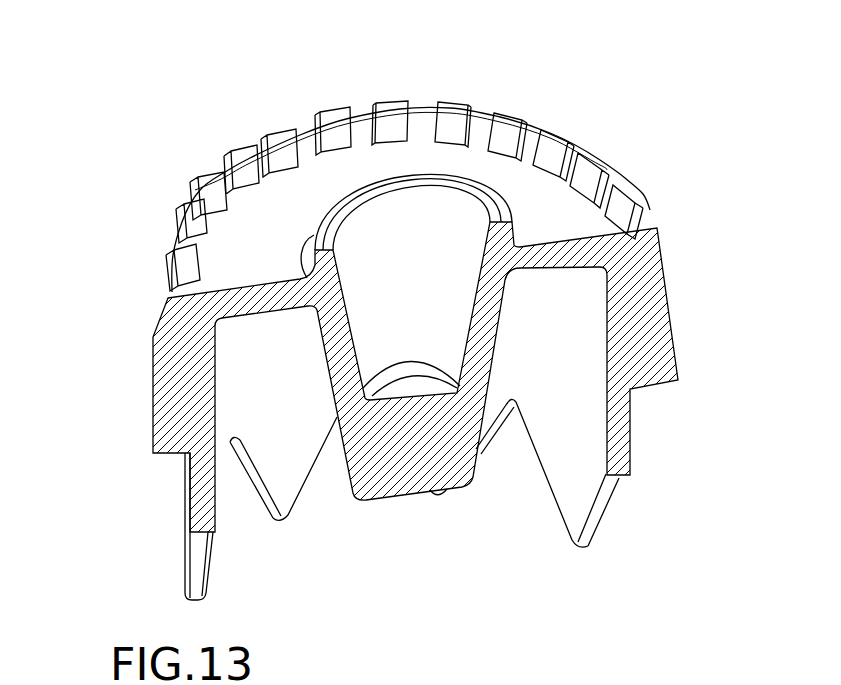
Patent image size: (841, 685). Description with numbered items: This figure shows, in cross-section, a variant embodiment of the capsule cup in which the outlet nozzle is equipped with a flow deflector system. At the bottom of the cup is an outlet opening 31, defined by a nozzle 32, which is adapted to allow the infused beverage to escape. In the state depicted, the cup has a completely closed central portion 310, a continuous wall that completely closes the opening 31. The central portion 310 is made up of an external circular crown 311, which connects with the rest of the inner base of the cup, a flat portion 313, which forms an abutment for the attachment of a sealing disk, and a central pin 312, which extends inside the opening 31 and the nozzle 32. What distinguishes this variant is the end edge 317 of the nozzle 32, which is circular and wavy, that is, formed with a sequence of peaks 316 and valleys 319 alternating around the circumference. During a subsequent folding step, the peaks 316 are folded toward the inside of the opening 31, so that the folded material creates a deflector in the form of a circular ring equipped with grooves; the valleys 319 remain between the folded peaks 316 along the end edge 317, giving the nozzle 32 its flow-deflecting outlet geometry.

The outlet opening 31 is at (393, 530).
The central portion 310 is at (358, 184).
The external circular crown 311 is at (458, 162).
The central pin 312 is at (495, 340).
The flat portion 313 is at (497, 208).
The peaks 316 is at (278, 522).
The end edge 317 is at (609, 514).
The valleys 319 is at (511, 406).
The nozzle 32 is at (197, 487).